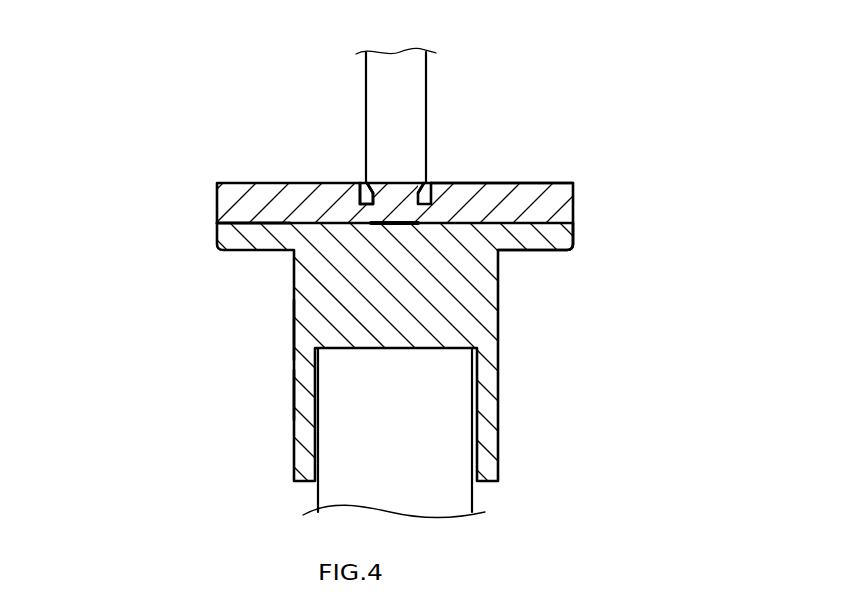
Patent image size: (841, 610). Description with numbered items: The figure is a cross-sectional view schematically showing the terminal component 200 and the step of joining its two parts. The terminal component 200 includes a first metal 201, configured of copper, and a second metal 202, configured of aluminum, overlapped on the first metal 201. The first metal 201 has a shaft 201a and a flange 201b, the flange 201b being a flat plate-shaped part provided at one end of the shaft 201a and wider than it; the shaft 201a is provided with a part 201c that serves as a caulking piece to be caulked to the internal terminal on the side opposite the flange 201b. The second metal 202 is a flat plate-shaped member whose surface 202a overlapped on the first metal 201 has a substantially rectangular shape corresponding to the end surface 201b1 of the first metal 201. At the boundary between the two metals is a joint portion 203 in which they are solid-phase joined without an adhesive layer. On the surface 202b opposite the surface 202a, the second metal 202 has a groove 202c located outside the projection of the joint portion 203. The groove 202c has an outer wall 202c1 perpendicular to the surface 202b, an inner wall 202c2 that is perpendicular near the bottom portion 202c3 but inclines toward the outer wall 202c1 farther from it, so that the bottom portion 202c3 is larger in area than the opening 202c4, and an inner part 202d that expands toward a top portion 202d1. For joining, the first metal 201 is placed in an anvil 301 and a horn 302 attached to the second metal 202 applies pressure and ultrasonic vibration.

The terminal component 200 is at (112, 100).
The first metal 201 is at (530, 375).
The shaft 201a is at (294, 325).
The flange 201b is at (573, 232).
The end surface 201b1 is at (238, 215).
The part serving as caulking piece 201c is at (294, 389).
The second metal 202 is at (194, 198).
The surface 202a is at (251, 229).
The surface 202b is at (546, 177).
The groove 202c is at (430, 215).
The outer wall 202c1 is at (353, 193).
The inner wall 202c2 is at (377, 201).
The bottom portion 202c3 is at (365, 212).
The opening 202c4 is at (357, 178).
The inner part 202d is at (392, 162).
The top portion 202d1 is at (404, 177).
The joint portion 203 is at (393, 231).
The anvil 301 is at (315, 497).
The horn 302 is at (366, 80).